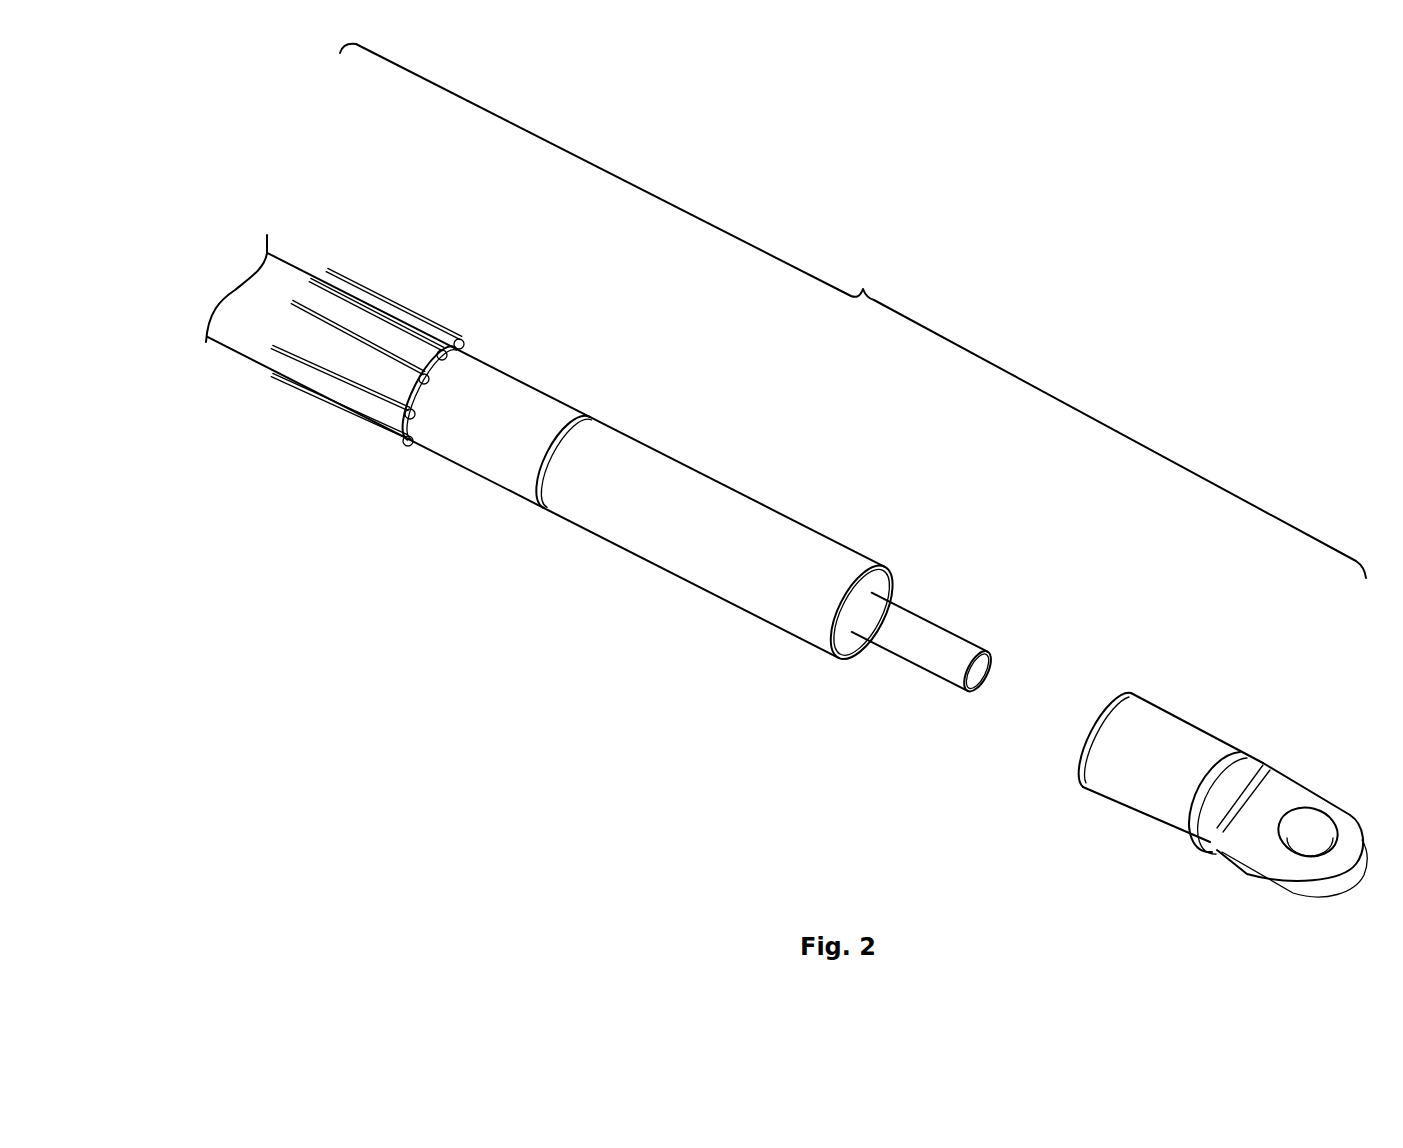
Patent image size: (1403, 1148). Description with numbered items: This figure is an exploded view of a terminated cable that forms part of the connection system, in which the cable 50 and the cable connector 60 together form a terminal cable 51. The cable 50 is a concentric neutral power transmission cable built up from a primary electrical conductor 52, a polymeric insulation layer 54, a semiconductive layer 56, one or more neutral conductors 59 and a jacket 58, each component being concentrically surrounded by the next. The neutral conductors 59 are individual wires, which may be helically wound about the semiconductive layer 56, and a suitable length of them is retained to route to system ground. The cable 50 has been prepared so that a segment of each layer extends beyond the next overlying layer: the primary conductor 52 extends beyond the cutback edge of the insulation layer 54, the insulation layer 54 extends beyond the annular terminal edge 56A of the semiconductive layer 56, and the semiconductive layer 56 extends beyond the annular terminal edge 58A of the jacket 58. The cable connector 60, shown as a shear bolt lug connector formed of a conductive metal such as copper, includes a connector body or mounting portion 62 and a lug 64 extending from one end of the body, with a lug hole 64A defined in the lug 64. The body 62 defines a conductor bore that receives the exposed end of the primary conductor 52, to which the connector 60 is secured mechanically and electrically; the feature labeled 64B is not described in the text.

The cable 50 is at (570, 616).
The terminal cable 51 is at (880, 274).
The primary electrical conductor 52 is at (912, 645).
The polymeric insulation layer 54 is at (717, 568).
The semiconductive layer 56 is at (522, 397).
The terminal edge of semiconductive layer 56A is at (552, 460).
The jacket 58 is at (286, 273).
The terminal edge of jacket 58A is at (410, 428).
The neutral conductors 59 is at (397, 302).
The cable connector 60 is at (1176, 878).
The connector body 62 is at (1193, 733).
The lug 64 is at (1312, 885).
The lug hole 64A is at (1100, 698).
The aperture 64B is at (1318, 825).